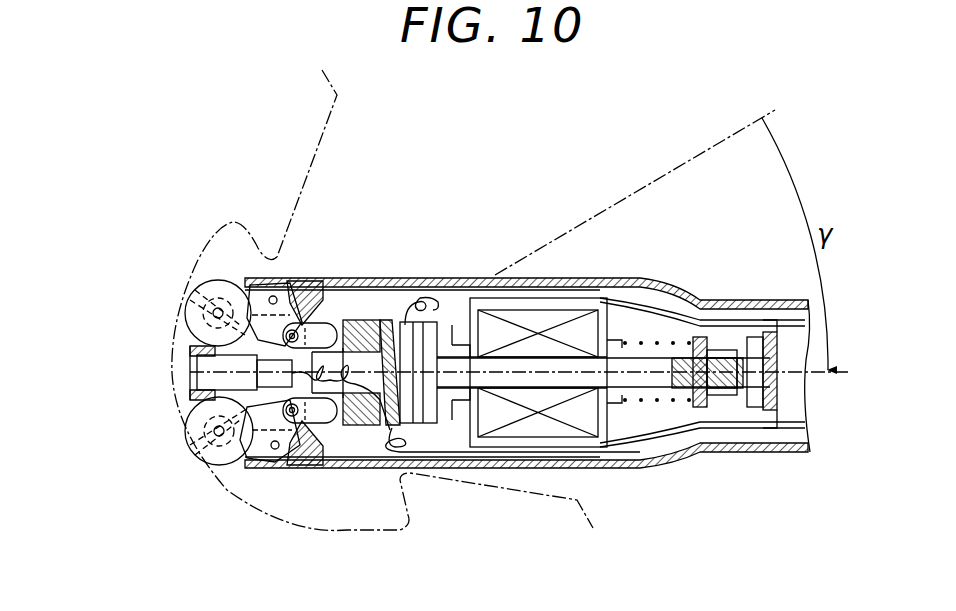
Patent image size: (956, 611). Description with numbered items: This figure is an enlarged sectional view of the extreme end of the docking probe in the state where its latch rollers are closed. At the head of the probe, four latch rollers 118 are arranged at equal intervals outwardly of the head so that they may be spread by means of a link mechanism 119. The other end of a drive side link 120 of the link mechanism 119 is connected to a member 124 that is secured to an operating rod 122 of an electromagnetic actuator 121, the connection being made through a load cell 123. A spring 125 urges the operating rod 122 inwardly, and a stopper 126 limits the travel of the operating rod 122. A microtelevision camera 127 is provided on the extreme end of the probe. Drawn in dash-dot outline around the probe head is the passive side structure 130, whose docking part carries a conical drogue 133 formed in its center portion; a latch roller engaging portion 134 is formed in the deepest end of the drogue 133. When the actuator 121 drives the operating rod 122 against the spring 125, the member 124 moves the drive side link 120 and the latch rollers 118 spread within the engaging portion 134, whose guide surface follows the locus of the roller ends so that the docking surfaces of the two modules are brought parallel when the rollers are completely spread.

The passive side structure 130 is at (258, 159).
The conical drogue 133 is at (313, 172).
The latch roller engaging portion 134 is at (197, 262).
The latch rollers 118 is at (196, 303).
The microtelevision camera 127 is at (205, 374).
The link mechanism 119 is at (273, 470).
The drive side link 120 is at (323, 278).
The member 124 is at (386, 320).
The load cell 123 is at (407, 407).
The electromagnetic actuator 121 is at (563, 315).
The spring 125 is at (625, 342).
The operating rod 122 is at (650, 362).
The stopper 126 is at (750, 400).